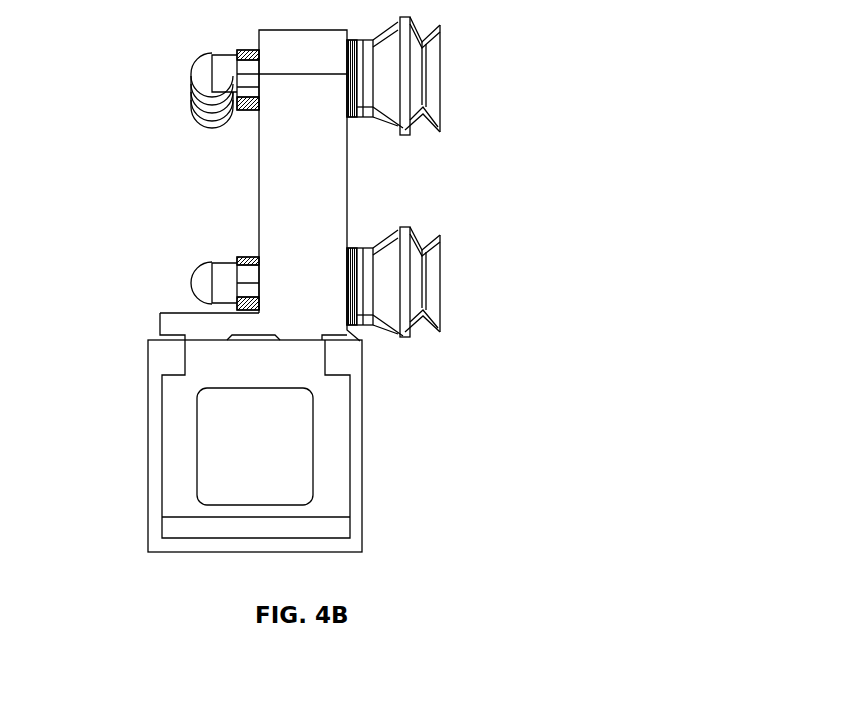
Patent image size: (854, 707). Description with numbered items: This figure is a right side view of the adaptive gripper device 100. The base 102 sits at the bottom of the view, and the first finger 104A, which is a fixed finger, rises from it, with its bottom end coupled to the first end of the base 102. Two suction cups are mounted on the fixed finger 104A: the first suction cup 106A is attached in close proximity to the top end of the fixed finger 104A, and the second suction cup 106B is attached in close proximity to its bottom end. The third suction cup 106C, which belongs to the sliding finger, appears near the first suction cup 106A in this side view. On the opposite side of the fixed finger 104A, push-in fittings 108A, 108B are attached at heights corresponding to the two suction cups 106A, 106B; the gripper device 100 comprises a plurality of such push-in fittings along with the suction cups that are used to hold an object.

The adaptive gripper device 100 is at (377, 588).
The base 102 is at (350, 459).
The first finger 104A is at (270, 192).
The first suction cup 106A is at (405, 70).
The second suction cup 106B is at (403, 280).
The third suction cup 106C is at (407, 131).
The push-in fitting 108A is at (198, 74).
The push-in fitting 108B is at (196, 282).